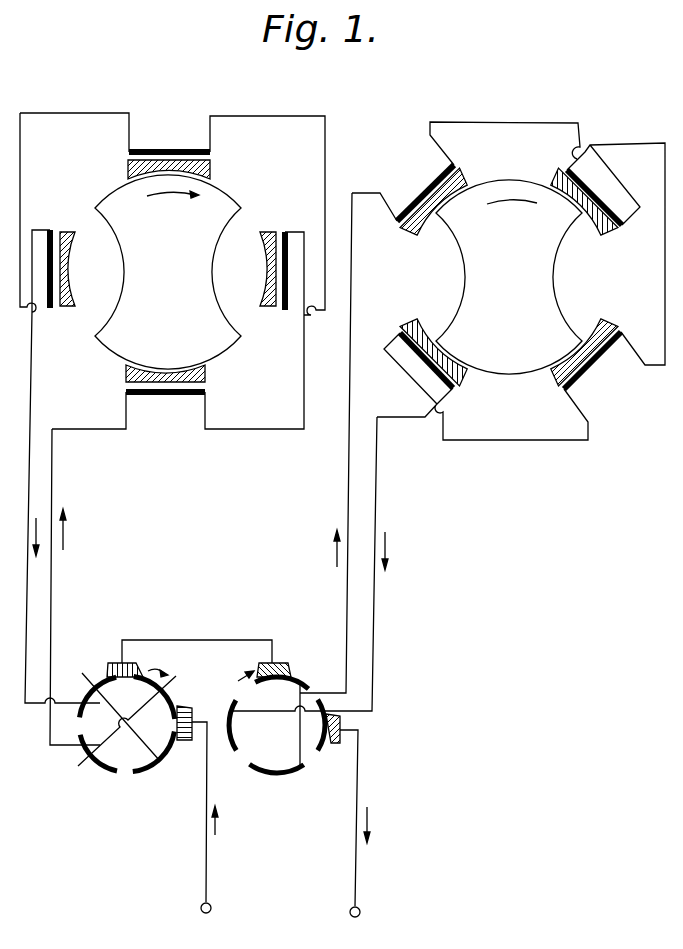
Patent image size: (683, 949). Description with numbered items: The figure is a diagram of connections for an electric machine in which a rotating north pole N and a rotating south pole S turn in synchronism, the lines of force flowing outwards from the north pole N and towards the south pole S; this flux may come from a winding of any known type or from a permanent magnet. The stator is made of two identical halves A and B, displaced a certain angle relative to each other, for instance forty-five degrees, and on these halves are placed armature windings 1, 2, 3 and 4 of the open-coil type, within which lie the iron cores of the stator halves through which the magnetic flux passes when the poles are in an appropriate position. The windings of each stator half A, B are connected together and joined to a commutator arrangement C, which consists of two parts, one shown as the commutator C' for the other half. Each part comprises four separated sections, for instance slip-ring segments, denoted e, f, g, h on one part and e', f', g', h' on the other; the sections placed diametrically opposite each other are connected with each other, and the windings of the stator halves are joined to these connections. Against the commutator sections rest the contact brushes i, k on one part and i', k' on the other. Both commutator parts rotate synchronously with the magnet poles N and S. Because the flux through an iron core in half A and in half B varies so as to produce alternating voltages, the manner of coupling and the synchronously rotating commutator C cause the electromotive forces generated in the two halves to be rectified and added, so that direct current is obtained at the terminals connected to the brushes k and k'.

The stator half A is at (172, 249).
The stator half B is at (508, 263).
The rotating south pole S is at (168, 272).
The rotating north pole N is at (509, 277).
The armature winding 1 is at (166, 147).
The armature winding 2 is at (283, 270).
The armature winding 3 is at (166, 396).
The armature winding 4 is at (48, 270).
The commutator arrangement C is at (284, 776).
The commutator part C' is at (138, 774).
The commutator section e is at (290, 672).
The commutator section f is at (325, 744).
The commutator section g is at (277, 789).
The commutator section h is at (227, 745).
The contact brush i is at (277, 651).
The contact brush k is at (352, 826).
The commutator section e' is at (165, 685).
The commutator section f' is at (154, 767).
The commutator section g' is at (87, 766).
The commutator section h' is at (89, 689).
The contact brush i' is at (114, 649).
The contact brush k' is at (198, 807).